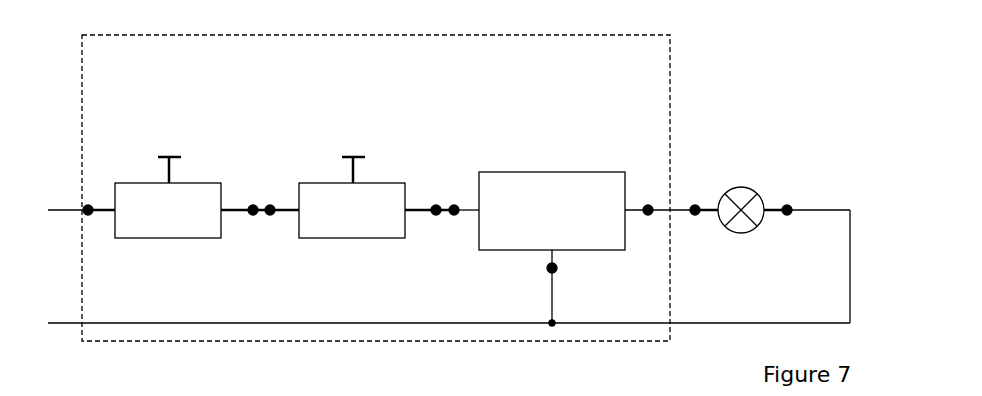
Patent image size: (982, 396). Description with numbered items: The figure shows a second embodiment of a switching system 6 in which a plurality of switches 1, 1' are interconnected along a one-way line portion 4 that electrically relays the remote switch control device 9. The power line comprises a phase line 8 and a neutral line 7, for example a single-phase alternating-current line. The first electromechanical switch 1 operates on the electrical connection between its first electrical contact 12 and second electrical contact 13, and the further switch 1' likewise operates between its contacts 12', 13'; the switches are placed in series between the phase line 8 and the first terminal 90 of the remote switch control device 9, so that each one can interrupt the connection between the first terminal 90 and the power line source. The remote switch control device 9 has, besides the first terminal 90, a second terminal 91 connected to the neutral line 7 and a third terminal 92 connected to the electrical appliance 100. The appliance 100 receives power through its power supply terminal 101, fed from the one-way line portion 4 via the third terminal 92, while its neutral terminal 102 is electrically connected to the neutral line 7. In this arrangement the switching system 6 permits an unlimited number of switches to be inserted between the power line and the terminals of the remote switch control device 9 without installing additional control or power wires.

The electromechanical switch 1 is at (168, 143).
The second switch 1' is at (352, 143).
The one-way line portion 4 is at (265, 222).
The switching system 6 is at (673, 88).
The neutral line 7 is at (58, 312).
The phase line 8 is at (59, 198).
The remote switch control device 9 is at (561, 104).
The first electrical contact 12 is at (107, 160).
The second electrical contact 13 is at (236, 160).
The first electrical contact of second switch 12' is at (288, 161).
The second electrical contact of second switch 13' is at (419, 160).
The first terminal 90 is at (457, 194).
The second terminal 91 is at (563, 261).
The third terminal 92 is at (645, 194).
The electrical appliance 100 is at (762, 188).
The power supply terminal 101 is at (702, 222).
The neutral terminal 102 is at (793, 223).